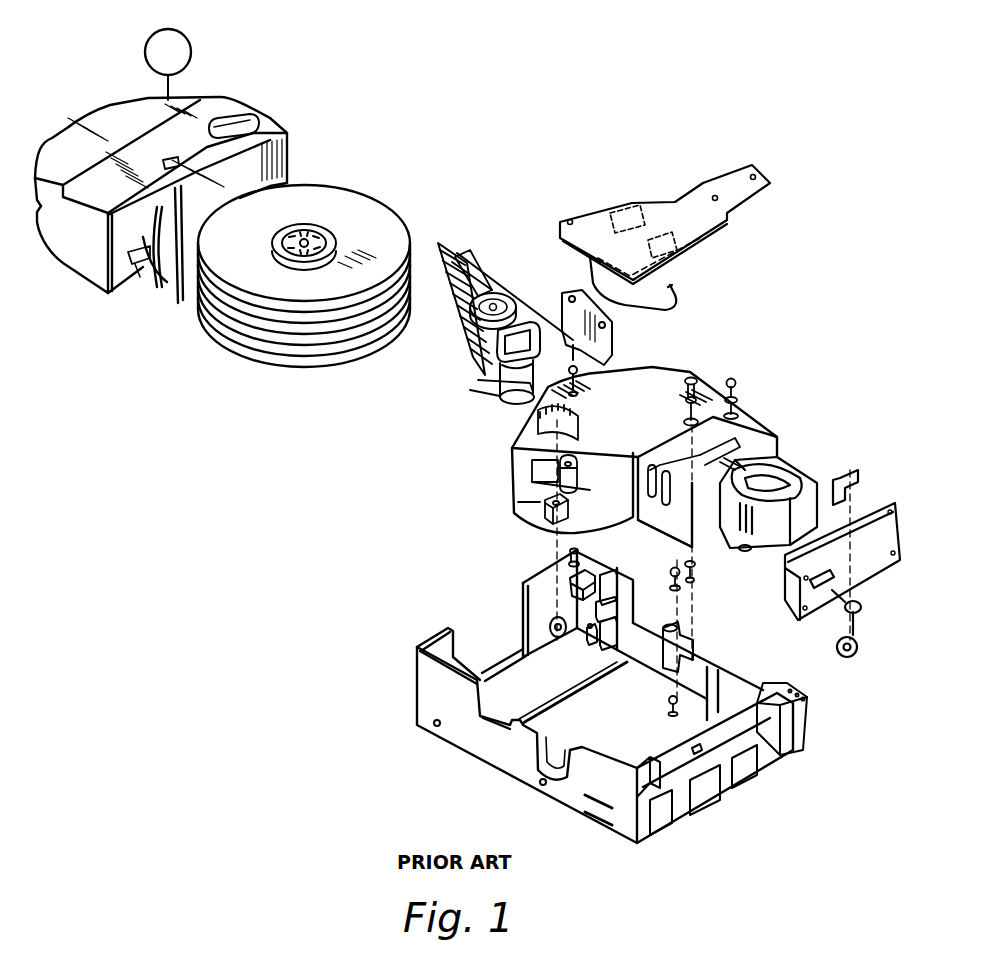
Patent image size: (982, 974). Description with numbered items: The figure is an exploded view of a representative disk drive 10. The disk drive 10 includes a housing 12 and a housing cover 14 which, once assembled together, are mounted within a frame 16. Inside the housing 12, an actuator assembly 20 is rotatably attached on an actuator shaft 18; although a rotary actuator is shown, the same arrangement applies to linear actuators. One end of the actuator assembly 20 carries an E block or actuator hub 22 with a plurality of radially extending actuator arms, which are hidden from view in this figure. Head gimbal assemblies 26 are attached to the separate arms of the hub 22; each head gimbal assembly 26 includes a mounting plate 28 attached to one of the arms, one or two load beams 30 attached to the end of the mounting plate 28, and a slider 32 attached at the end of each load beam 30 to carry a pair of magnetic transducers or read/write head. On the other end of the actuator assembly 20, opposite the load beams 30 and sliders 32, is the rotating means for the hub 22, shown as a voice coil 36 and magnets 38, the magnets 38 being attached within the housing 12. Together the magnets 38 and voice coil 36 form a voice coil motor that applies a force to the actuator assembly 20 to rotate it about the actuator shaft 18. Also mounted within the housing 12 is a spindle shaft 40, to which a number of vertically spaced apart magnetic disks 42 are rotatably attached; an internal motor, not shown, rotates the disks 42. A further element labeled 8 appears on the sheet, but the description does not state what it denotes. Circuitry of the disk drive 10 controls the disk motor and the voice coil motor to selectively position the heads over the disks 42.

The screw 8 is at (168, 64).
The disk drive 10 is at (412, 180).
The housing 12 is at (665, 378).
The housing cover 14 is at (87, 265).
The frame 16 is at (485, 753).
The actuator shaft 18 is at (495, 300).
The actuator assembly 20 is at (440, 388).
The actuator hub 22 is at (522, 311).
The head gimbal assembly 26 is at (503, 232).
The mounting plate 28 is at (480, 280).
The load beam 30 is at (455, 251).
The slider 32 is at (440, 246).
The voice coil 36 is at (527, 399).
The magnets 38 is at (797, 466).
The spindle shaft 40 is at (303, 240).
The magnetic disks 42 is at (275, 352).